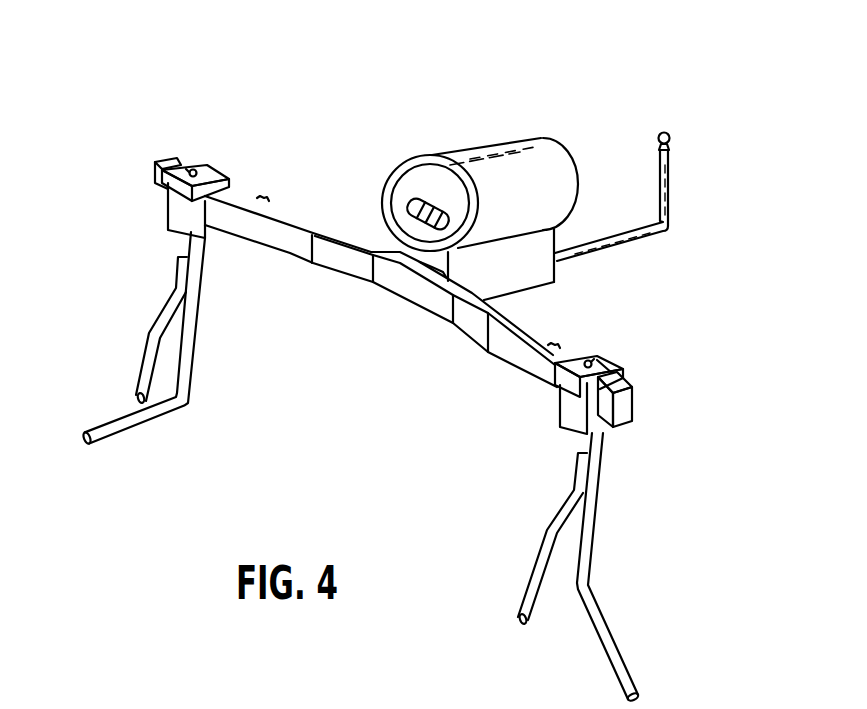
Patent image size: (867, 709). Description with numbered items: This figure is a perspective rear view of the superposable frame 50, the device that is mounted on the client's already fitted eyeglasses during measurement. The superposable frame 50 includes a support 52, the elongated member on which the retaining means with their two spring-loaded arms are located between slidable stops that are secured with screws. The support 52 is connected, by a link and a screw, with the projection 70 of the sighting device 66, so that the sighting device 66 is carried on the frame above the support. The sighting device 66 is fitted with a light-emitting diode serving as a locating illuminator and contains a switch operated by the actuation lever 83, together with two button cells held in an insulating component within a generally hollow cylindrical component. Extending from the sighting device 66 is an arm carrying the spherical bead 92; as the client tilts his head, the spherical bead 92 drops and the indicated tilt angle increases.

The superposable frame 50 is at (488, 368).
The support 52 is at (300, 194).
The sighting device 66 is at (494, 133).
The projection 70 is at (583, 292).
The actuation lever 83 is at (405, 145).
The spherical bead 92 is at (690, 113).